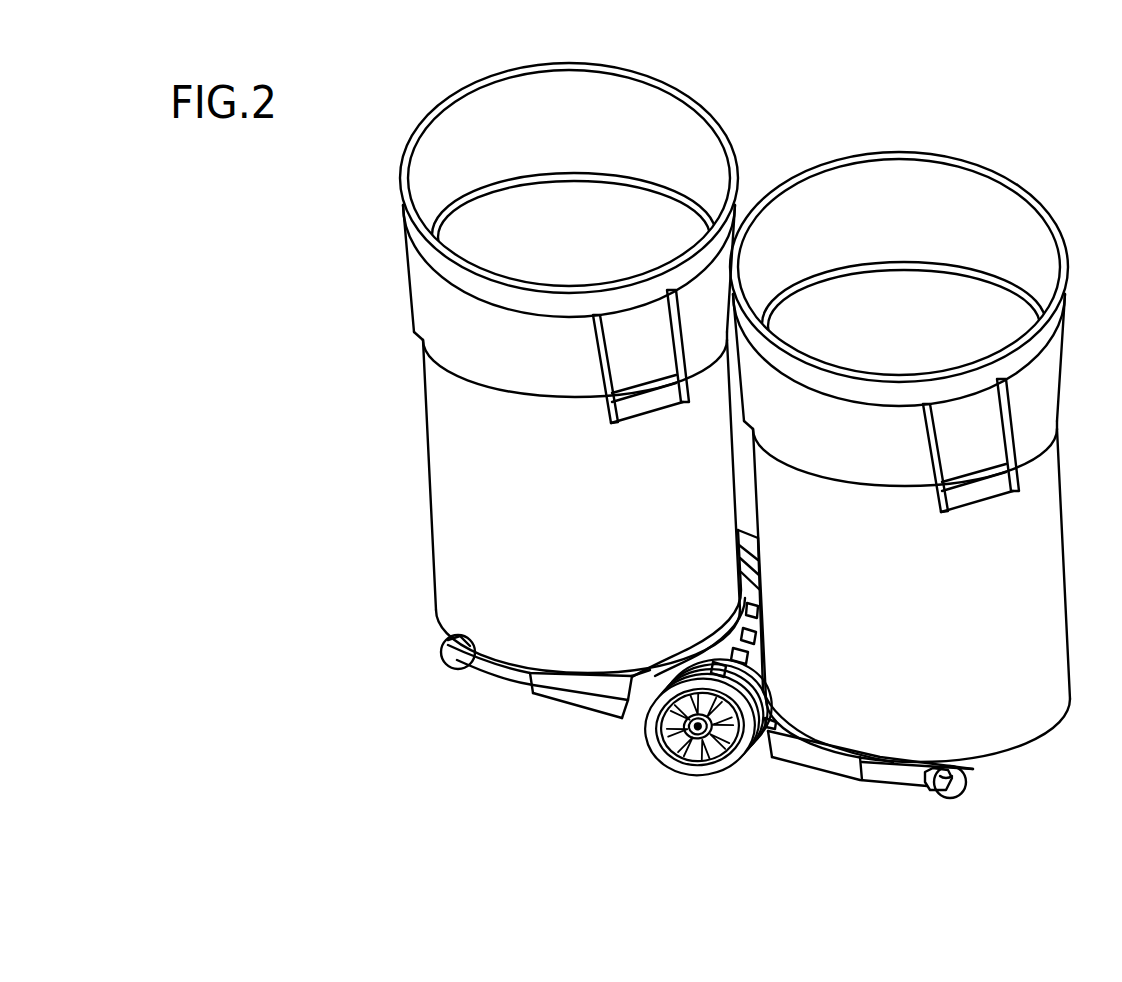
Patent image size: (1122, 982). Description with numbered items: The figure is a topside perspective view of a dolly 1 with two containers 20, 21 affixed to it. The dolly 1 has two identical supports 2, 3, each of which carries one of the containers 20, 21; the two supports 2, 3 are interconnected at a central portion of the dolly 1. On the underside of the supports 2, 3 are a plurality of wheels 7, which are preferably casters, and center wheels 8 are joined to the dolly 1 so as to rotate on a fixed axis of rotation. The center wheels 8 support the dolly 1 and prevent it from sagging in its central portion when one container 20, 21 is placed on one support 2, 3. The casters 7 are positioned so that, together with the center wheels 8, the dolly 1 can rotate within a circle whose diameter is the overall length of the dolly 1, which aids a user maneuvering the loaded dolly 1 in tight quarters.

The dolly 1 is at (740, 820).
The support 2 is at (574, 697).
The support 3 is at (815, 762).
The wheels 7 is at (455, 663).
The center wheels 8 is at (685, 775).
The container 20 is at (455, 436).
The container 21 is at (1037, 520).